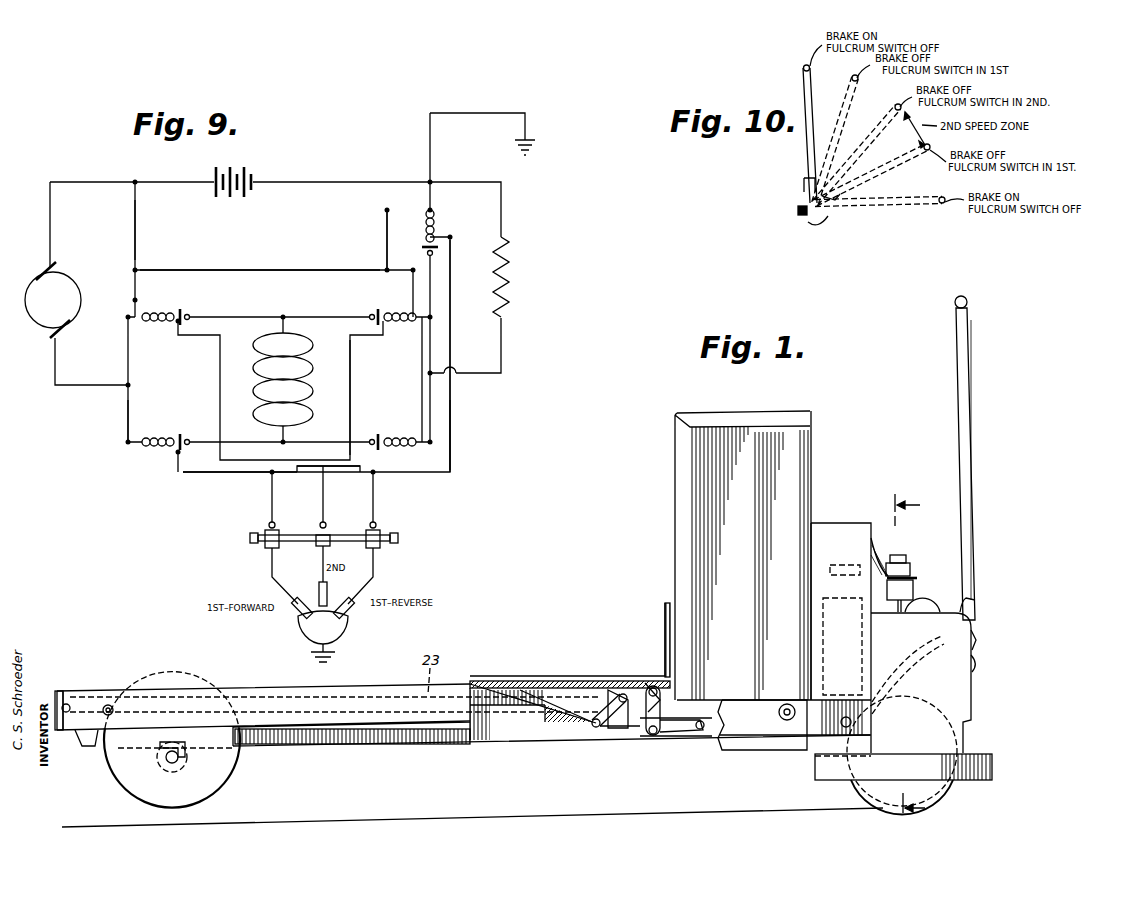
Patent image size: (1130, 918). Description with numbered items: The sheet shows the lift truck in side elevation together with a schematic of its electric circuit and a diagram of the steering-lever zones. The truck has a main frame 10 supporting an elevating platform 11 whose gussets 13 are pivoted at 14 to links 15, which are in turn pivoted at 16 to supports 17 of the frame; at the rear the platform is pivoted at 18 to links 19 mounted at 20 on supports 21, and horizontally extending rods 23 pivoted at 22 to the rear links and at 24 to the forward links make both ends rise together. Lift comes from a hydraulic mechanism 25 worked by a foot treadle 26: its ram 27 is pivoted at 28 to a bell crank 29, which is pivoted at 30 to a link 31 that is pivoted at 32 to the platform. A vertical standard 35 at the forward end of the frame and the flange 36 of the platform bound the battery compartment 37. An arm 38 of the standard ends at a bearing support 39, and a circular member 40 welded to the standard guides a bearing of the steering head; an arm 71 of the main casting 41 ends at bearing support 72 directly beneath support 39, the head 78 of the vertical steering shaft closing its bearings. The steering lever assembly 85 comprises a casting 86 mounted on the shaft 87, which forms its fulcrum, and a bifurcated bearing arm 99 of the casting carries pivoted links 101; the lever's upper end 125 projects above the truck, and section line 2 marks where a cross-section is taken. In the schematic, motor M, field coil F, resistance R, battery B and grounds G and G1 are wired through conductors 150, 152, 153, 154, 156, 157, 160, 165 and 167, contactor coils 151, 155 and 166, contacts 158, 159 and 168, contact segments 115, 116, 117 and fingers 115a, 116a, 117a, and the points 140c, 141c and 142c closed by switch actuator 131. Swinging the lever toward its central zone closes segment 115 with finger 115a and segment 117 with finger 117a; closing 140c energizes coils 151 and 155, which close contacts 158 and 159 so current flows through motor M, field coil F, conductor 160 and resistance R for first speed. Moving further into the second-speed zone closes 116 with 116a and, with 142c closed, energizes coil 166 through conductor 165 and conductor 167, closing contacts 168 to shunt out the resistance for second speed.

In FIG. 9, the motor M is at (53, 300).
In FIG. 9, the battery B is at (252, 167).
In FIG. 9, the ground G1 is at (531, 143).
In FIG. 9, the ground G is at (316, 660).
In FIG. 9, the traction resistance R is at (509, 272).
In FIG. 9, the field coil F is at (283, 373).
In FIG. 9, the conductor 150 is at (137, 218).
In FIG. 9, the contactor coil 151 is at (165, 438).
In FIG. 9, the conductor 152 is at (205, 476).
In FIG. 9, the conductor 153 is at (268, 492).
In FIG. 9, the conductor 154 is at (284, 270).
In FIG. 9, the contactor coil 155 is at (392, 308).
In FIG. 9, the conductor 156 is at (352, 367).
In FIG. 9, the conductor 157 is at (305, 462).
In FIG. 9, the contacts 158 is at (186, 458).
In FIG. 9, the contacts 159 is at (367, 314).
In FIG. 9, the conductor 160 is at (441, 346).
In FIG. 9, the conductor 165 is at (387, 224).
In FIG. 9, the contactor coil 166 is at (436, 222).
In FIG. 9, the conductor 167 is at (453, 434).
In FIG. 9, the contacts 168 is at (437, 249).
In FIG. 9, the contact finger 115a is at (268, 525).
In FIG. 9, the contact finger 116a is at (320, 523).
In FIG. 9, the contact finger 117a is at (377, 524).
In FIG. 9, the contact segment 115 is at (270, 550).
In FIG. 9, the contact segment 116 is at (318, 547).
In FIG. 9, the contact segment 117 is at (382, 546).
In FIG. 9, the shaft 87 is at (335, 535).
In FIG. 10, the shaft 87 is at (802, 215).
In FIG. 9, the contact point 140c is at (296, 614).
In FIG. 9, the contact point 141c is at (352, 616).
In FIG. 9, the contact point 142c is at (313, 633).
In FIG. 9, the switch actuator 131 is at (340, 642).
In FIG. 10, the steering lever assembly 85 is at (806, 142).
In FIG. 1, the steering lever assembly 85 is at (980, 455).
In FIG. 10, the casting 86 is at (819, 216).
In FIG. 1, the casting 86 is at (962, 606).
In FIG. 1, the handle knob 125 is at (968, 302).
In FIG. 1, the battery compartment 37 is at (675, 483).
In FIG. 1, the flange 36 is at (667, 603).
In FIG. 1, the vertical standard 35 is at (828, 523).
In FIG. 1, the arm 38 is at (880, 545).
In FIG. 1, the head 78 is at (895, 556).
In FIG. 1, the bearing support 39 is at (908, 560).
In FIG. 1, the bearing support 72 is at (913, 582).
In FIG. 1, the arm 71 is at (918, 600).
In FIG. 1, the main casting 41 is at (921, 683).
In FIG. 1, the links 101 is at (978, 640).
In FIG. 1, the bifurcated bearing arm 99 is at (978, 664).
In FIG. 1, the foot treadle 26 is at (922, 660).
In FIG. 1, the circular member 40 is at (994, 767).
In FIG. 1, the hydraulic mechanism 25 is at (762, 752).
In FIG. 1, the ram 27 is at (703, 730).
In FIG. 1, the pivot 28 is at (690, 732).
In FIG. 1, the bell crank 29 is at (668, 740).
In FIG. 1, the pivot 30 is at (652, 736).
In FIG. 1, the pivot 16 is at (622, 727).
In FIG. 1, the supports 17 is at (606, 728).
In FIG. 1, the pivot 14 is at (590, 727).
In FIG. 1, the main frame 10 is at (536, 742).
In FIG. 1, the elevating platform 11 is at (500, 688).
In FIG. 1, the gussets 13 is at (550, 690).
In FIG. 1, the pivot 24 is at (572, 681).
In FIG. 1, the links 15 is at (620, 694).
In FIG. 1, the pivot 32 is at (650, 685).
In FIG. 1, the link 31 is at (668, 664).
In FIG. 1, the rods 23 is at (78, 736).
In FIG. 1, the pivot 22 is at (66, 704).
In FIG. 1, the links 19 is at (106, 705).
In FIG. 1, the pivot 20 is at (112, 708).
In FIG. 1, the supports 21 is at (165, 700).
In FIG. 1, the pivot 18 is at (118, 746).
In FIG. 1, the section line 2 is at (925, 656).